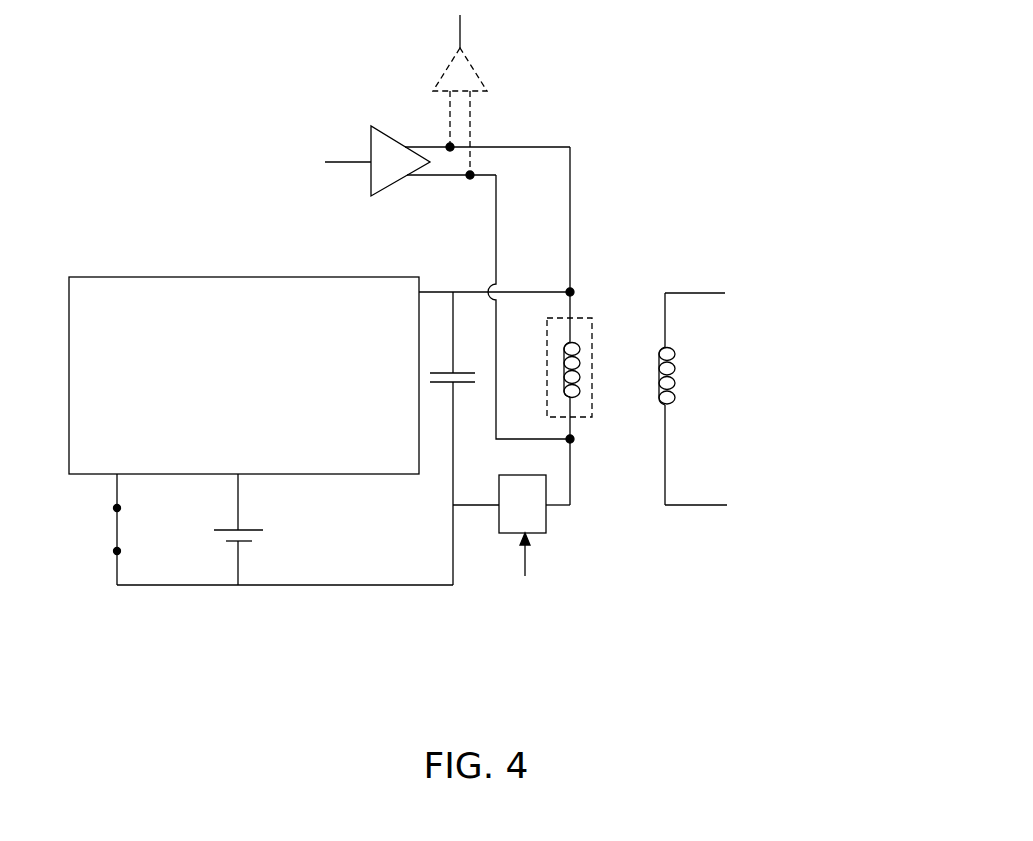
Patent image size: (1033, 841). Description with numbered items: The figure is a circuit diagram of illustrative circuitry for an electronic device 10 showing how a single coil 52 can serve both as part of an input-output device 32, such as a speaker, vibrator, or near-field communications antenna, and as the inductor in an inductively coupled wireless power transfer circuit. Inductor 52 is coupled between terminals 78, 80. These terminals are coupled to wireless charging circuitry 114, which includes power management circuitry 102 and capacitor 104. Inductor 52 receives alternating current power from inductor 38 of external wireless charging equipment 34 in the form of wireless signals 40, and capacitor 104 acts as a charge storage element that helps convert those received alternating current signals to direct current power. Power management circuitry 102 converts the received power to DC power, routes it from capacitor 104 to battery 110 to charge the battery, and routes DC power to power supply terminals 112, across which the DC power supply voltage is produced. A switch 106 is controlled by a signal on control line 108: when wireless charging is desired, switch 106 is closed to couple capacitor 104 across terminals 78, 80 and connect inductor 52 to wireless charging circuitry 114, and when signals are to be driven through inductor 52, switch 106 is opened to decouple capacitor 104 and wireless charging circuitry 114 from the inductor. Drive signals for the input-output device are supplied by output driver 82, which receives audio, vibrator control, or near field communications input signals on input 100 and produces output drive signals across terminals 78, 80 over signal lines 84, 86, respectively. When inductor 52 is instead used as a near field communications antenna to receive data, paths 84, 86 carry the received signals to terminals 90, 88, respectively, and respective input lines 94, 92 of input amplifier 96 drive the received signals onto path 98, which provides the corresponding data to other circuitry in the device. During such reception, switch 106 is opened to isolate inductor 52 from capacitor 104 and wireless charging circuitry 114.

The electronic device 10 is at (80, 608).
The input-output device 32 is at (594, 357).
The wireless charging equipment 34 is at (761, 444).
The inductor 38 is at (692, 382).
The wireless signals 40 is at (642, 381).
The coil 52 is at (590, 356).
The terminal 78 is at (573, 290).
The terminal 80 is at (567, 443).
The output driver 82 is at (390, 184).
The signal line 84 is at (570, 147).
The signal line 86 is at (496, 228).
The terminal 88 is at (466, 185).
The terminal 90 is at (448, 145).
The input line 92 is at (470, 120).
The input line 94 is at (447, 107).
The input amplifier 96 is at (477, 70).
The path 98 is at (460, 22).
The input 100 is at (350, 162).
The power management circuitry 102 is at (368, 474).
The capacitor 104 is at (469, 398).
The switch 106 is at (547, 520).
The control line 108 is at (522, 556).
The battery 110 is at (272, 546).
The power supply terminals 112 is at (115, 508).
The wireless charging circuitry 114 is at (150, 240).